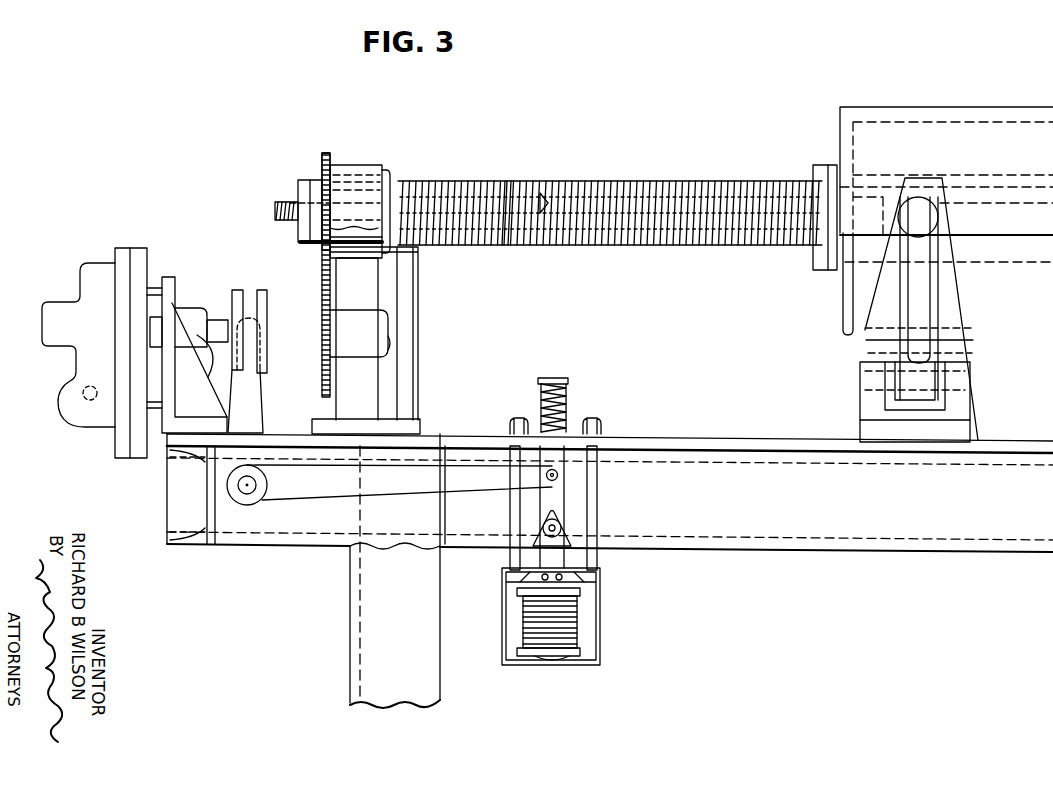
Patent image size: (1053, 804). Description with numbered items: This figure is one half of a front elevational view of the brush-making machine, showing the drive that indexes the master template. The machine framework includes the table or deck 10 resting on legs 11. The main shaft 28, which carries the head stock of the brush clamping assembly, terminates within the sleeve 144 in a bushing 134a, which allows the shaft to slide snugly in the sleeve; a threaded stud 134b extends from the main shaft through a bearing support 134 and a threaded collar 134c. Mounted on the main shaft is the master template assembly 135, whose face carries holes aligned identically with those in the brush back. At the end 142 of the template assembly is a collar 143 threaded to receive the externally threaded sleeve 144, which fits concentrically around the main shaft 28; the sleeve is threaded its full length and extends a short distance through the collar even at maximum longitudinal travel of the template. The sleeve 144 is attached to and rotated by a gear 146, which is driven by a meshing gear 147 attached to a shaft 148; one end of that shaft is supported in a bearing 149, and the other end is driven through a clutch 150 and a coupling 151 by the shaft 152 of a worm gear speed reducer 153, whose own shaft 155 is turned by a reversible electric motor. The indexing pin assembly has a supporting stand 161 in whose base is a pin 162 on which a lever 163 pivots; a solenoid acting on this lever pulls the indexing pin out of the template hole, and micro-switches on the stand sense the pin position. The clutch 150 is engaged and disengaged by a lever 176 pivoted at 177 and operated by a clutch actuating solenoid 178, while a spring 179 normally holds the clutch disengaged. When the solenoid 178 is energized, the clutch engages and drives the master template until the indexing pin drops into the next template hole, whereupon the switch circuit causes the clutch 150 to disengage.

The table or deck 10 is at (750, 441).
The legs 11 is at (358, 621).
The main shaft 28 is at (550, 187).
The bearing support 134 is at (366, 167).
The bushing 134a is at (511, 186).
The threaded stud 134b is at (285, 204).
The threaded collar 134c is at (304, 180).
The master template assembly 135 is at (961, 94).
The other end of template assembly 142 is at (836, 122).
The collar 143 is at (826, 178).
The sleeve 144 is at (684, 180).
The gear 146 is at (329, 160).
The meshing gear 147 is at (320, 280).
The shaft 148 is at (398, 330).
The bearing 149 is at (398, 348).
The clutch 150 is at (250, 302).
The coupling 151 is at (209, 378).
The shaft 152 is at (157, 312).
The worm gear speed reducer 153 is at (130, 250).
The shaft 155 is at (91, 400).
The supporting stand 161 is at (968, 317).
The pin 162 is at (866, 386).
The lever 163 is at (935, 293).
The lever 176 is at (258, 404).
The pivot 177 is at (248, 498).
The clutch actuating solenoid 178 is at (583, 631).
The spring 179 is at (571, 388).